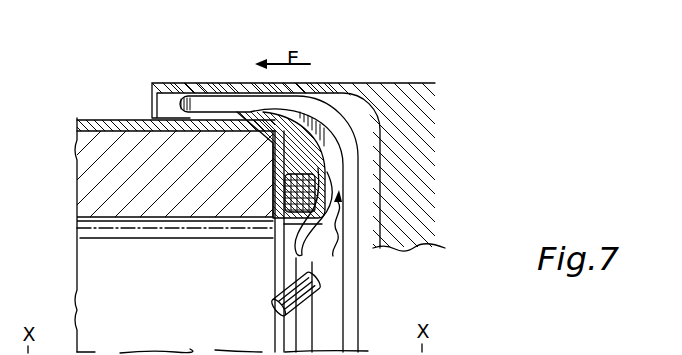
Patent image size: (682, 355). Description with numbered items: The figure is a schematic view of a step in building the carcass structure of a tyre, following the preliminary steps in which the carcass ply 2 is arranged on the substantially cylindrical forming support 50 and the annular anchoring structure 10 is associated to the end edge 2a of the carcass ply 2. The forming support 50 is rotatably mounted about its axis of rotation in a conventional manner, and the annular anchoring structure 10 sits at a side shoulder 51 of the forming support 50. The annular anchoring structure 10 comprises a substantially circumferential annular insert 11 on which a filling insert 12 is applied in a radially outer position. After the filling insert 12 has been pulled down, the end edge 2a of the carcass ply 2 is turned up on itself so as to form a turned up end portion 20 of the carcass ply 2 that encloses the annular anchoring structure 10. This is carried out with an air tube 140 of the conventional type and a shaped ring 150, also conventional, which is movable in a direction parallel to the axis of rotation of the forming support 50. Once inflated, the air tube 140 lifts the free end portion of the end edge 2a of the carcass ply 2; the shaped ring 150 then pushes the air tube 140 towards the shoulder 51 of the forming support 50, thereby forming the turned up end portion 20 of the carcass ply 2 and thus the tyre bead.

The carcass ply 2 is at (103, 118).
The end edge of the carcass ply 2a is at (293, 240).
The annular anchoring structure 10 is at (260, 162).
The annular insert 11 is at (268, 205).
The filling insert 12 is at (262, 148).
The turned up end portion of the carcass ply 20 is at (338, 145).
The forming support 50 is at (105, 165).
The side shoulder of the forming support 51 is at (295, 190).
The air tube 140 is at (338, 175).
The shaped ring 150 is at (355, 96).